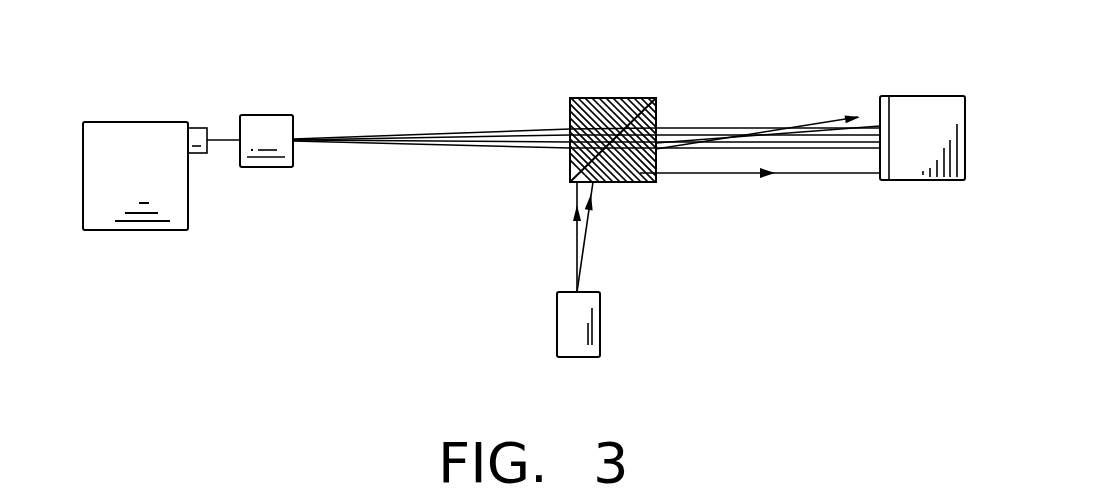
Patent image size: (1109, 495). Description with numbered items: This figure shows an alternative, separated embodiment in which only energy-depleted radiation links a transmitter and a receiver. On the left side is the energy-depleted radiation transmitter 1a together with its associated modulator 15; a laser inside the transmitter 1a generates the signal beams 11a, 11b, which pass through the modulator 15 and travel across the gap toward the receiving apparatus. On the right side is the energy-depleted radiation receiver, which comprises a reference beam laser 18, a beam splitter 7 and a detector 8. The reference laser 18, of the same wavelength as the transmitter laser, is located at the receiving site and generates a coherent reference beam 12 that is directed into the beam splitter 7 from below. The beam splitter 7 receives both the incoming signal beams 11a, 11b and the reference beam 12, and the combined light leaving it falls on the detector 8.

The energy-depleted radiation transmitter 1a is at (130, 122).
The modulator 15 is at (267, 168).
The beam splitter 7 is at (612, 98).
The signal beam 11a is at (812, 148).
The signal beam 11b is at (822, 132).
The coherent reference beam 12 is at (583, 234).
The reference beam laser 18 is at (557, 320).
The detector 8 is at (880, 107).